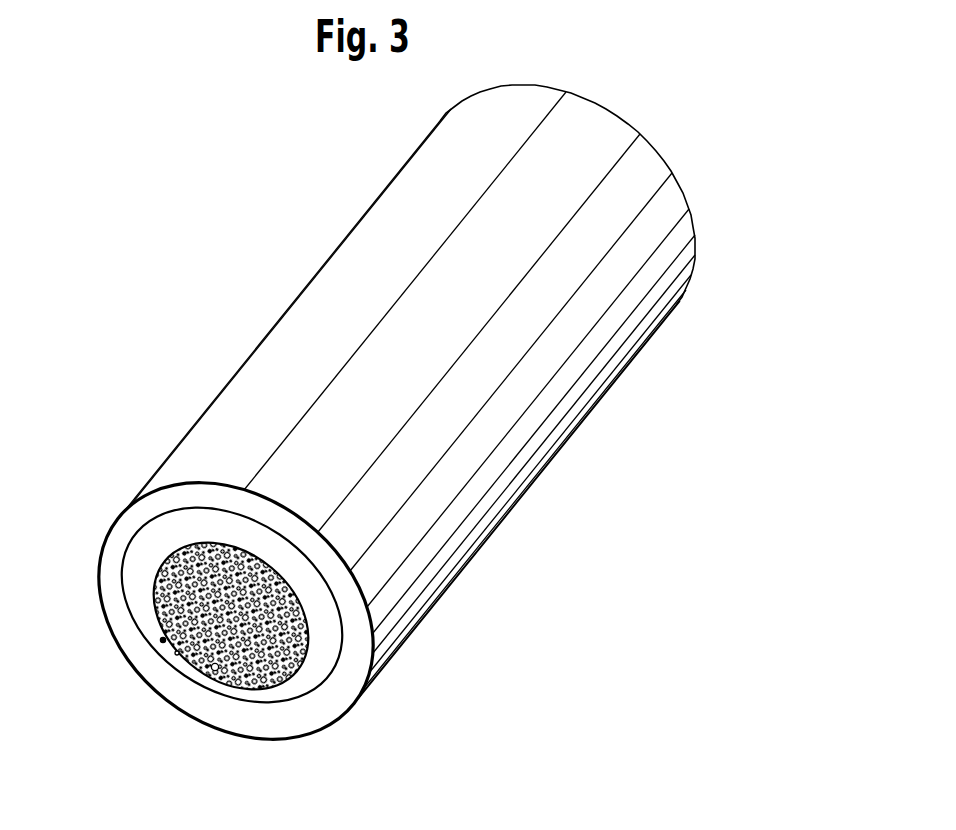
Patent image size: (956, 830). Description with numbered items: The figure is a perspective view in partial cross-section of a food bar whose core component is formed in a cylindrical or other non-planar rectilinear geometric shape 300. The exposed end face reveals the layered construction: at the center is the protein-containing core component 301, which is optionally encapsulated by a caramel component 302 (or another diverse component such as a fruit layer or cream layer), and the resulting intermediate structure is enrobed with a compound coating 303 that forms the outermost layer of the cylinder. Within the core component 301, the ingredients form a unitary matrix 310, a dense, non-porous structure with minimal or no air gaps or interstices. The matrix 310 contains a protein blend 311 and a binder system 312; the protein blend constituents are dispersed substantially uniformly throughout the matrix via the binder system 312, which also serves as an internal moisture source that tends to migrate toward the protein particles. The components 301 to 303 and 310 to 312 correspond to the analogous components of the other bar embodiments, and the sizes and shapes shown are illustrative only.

The cylindrical non-planar rectilinear geometric shape 300 is at (224, 248).
The protein-containing core component 301 is at (152, 612).
The caramel component 302 is at (148, 545).
The compound coating 303 is at (161, 497).
The unitary matrix 310 is at (213, 671).
The protein blend 311 is at (173, 656).
The binder system 312 is at (163, 643).